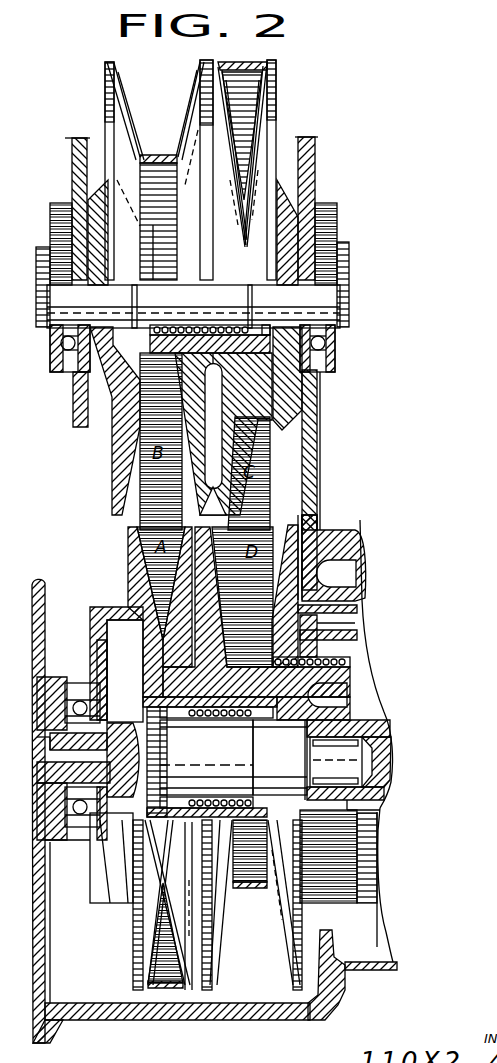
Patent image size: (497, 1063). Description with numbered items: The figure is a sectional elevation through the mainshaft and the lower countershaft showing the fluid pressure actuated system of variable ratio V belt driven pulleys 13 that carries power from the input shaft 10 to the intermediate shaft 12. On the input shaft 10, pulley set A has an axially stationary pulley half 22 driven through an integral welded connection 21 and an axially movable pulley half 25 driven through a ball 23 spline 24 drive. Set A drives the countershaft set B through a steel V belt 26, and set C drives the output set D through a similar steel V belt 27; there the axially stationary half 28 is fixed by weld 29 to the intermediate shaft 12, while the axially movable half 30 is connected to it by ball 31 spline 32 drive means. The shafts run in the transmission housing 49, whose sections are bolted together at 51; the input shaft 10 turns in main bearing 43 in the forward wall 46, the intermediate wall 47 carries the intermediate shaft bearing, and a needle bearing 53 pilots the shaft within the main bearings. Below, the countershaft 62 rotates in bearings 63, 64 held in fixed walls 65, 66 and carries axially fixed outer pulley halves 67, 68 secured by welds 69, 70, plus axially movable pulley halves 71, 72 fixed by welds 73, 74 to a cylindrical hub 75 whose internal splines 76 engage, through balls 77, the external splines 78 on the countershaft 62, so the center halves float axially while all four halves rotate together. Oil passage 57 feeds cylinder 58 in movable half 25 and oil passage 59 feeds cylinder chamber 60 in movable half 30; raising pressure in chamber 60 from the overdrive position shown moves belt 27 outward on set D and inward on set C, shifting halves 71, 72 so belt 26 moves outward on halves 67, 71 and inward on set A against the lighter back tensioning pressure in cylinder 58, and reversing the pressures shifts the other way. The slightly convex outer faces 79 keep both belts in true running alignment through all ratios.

The input shaft 10 is at (223, 758).
The intermediate shaft 12 is at (392, 743).
The variable ratio V belt driven pulleys 13 is at (123, 573).
The integral welded connection 21 is at (305, 720).
The axially stationary pulley half 22 is at (173, 583).
The ball 23 is at (220, 717).
The spline 24 is at (173, 717).
The axially movable pulley half 25 is at (150, 637).
The steel V belt 26 is at (157, 155).
The steel V belt 27 is at (237, 62).
The axially stationary half 28 is at (230, 576).
The weld 29 is at (310, 720).
The axially movable half 30 is at (277, 623).
The ball 31 is at (333, 677).
The spline 32 is at (263, 667).
The main bearing 43 is at (80, 702).
The forward wall 46 is at (43, 617).
The intermediate wall 47 is at (362, 585).
The transmission housing 49 is at (350, 545).
The bolted section joint 51 is at (333, 535).
The needle bearing 53 is at (313, 737).
The oil passage 57 is at (53, 757).
The cylinder 58 is at (134, 677).
The oil passage 59 is at (391, 760).
The cylinder chamber 60 is at (350, 645).
The countershaft 62 is at (193, 306).
The bearing 63 is at (53, 347).
The bearing 64 is at (337, 347).
The fixed wall 65 is at (72, 163).
The fixed wall 66 is at (315, 172).
The axially fixed outer pulley half 67 is at (108, 373).
The axially fixed outer pulley half 68 is at (245, 357).
The weld 69 is at (90, 330).
The weld 70 is at (303, 330).
The axially movable pulley half 71 is at (193, 470).
The axially movable pulley half 72 is at (270, 496).
The weld 73 is at (183, 369).
The weld 74 is at (247, 353).
The cylindrical hub 75 is at (193, 345).
The internal splines 76 is at (257, 333).
The balls 77 is at (209, 327).
The external splines 78 is at (150, 327).
The outer faces 79 is at (127, 130).